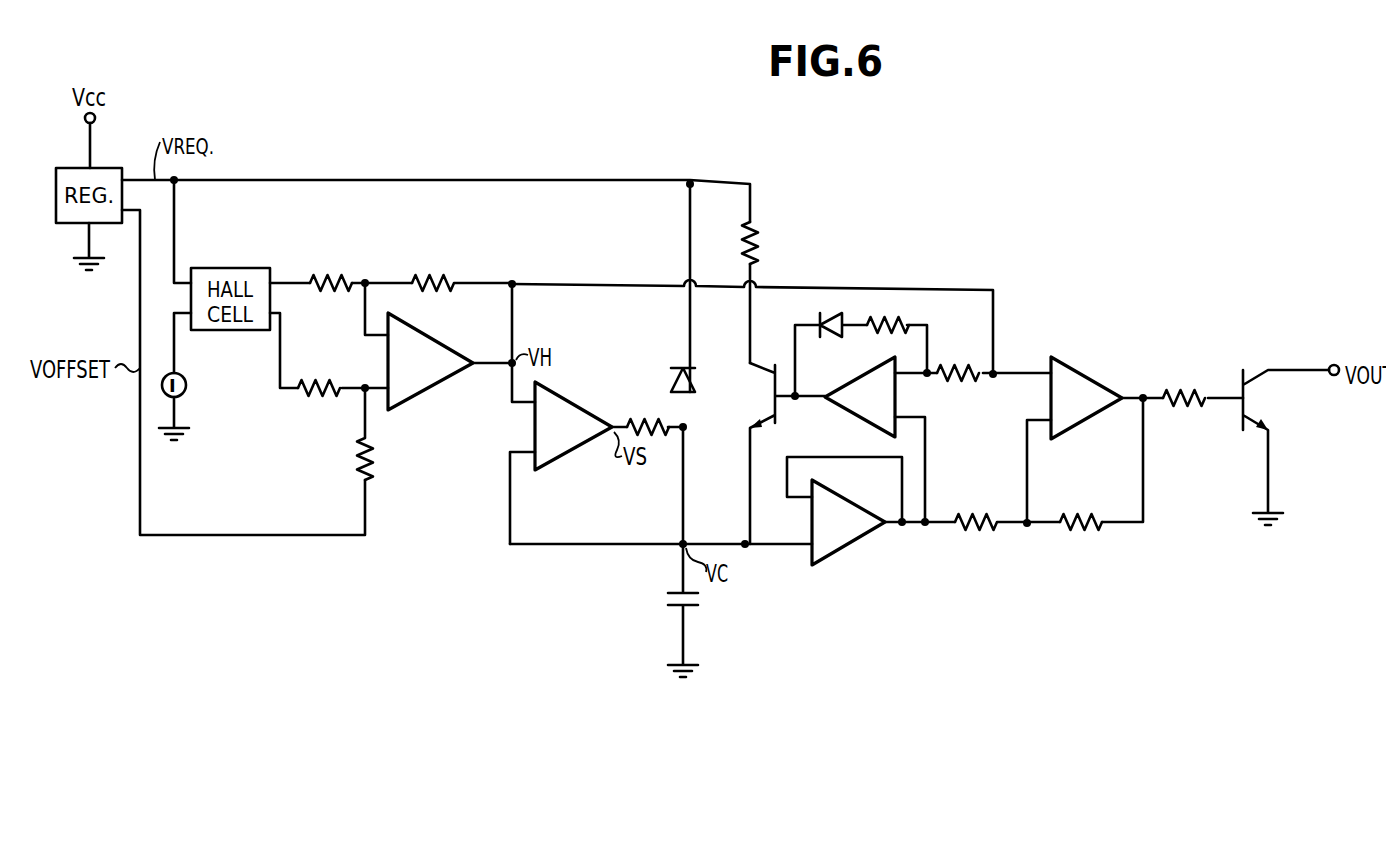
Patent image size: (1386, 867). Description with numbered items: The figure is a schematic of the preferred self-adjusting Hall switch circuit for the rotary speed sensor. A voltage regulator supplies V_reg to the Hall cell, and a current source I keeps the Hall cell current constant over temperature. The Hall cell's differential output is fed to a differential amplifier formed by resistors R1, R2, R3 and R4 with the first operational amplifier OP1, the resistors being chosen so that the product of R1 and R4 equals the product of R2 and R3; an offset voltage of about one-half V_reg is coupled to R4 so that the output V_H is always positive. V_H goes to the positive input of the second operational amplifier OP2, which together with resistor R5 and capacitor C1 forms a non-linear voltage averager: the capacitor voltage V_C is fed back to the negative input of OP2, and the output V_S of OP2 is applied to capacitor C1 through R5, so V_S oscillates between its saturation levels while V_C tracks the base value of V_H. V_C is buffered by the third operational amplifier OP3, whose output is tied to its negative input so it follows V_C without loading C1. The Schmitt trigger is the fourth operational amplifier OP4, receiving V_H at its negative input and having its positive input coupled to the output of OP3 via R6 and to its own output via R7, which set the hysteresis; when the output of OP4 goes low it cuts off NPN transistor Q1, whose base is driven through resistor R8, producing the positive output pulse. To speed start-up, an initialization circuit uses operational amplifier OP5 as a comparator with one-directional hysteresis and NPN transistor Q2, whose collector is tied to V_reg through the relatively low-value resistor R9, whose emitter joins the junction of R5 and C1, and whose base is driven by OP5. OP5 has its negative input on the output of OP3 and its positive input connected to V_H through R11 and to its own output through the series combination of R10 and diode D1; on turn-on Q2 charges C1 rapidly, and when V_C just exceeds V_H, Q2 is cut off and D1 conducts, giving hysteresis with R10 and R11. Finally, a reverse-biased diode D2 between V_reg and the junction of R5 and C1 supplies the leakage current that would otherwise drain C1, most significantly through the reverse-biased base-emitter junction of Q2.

The resistor R1 is at (327, 280).
The resistor R2 is at (338, 360).
The resistor R3 is at (430, 280).
The resistor R4 is at (372, 458).
The resistor R5 is at (650, 425).
The resistor R6 is at (965, 517).
The resistor R7 is at (1072, 517).
The resistor R8 is at (1193, 372).
The resistor R9 is at (755, 248).
The resistor R10 is at (896, 322).
The resistor R11 is at (958, 382).
The first operational amplifier OP1 is at (438, 346).
The second operational amplifier OP2 is at (568, 463).
The third operational amplifier OP3 is at (871, 511).
The fourth operational amplifier OP4 is at (1095, 440).
The operational amplifier OP5 is at (881, 439).
The NPN transistor Q1 is at (1248, 400).
The NPN transistor Q2 is at (775, 404).
The diode D1 is at (828, 313).
The diode D2 is at (682, 368).
The capacitor C1 is at (690, 607).